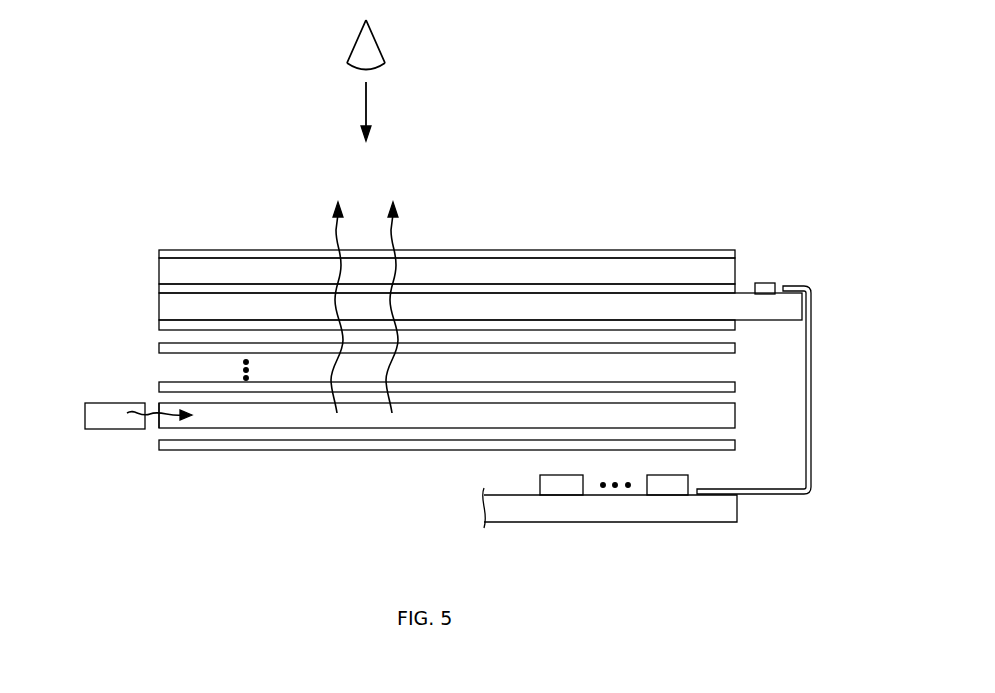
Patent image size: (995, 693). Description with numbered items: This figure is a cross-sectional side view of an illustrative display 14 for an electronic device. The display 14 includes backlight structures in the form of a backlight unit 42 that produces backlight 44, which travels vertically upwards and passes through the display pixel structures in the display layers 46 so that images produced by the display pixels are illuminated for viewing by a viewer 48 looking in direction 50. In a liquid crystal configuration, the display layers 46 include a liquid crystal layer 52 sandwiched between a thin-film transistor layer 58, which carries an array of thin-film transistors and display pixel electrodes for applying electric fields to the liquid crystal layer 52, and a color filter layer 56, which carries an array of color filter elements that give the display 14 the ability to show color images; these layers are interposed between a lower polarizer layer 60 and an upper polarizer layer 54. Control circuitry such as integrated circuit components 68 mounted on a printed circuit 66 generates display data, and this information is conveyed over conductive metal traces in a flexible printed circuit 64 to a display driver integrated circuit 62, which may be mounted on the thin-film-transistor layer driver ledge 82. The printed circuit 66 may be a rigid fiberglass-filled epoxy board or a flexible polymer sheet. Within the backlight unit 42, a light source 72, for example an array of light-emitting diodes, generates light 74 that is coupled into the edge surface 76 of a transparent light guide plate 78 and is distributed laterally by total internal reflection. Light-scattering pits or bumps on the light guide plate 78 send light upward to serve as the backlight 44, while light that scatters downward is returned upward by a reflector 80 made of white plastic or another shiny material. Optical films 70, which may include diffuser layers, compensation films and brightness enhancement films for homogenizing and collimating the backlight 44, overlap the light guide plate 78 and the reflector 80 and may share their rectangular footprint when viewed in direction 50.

The display 14 is at (754, 92).
The backlight unit 42 is at (445, 421).
The backlight 44 is at (338, 237).
The display layers 46 is at (452, 280).
The viewer 48 is at (377, 42).
The direction 50 is at (366, 110).
The liquid crystal layer 52 is at (270, 290).
The upper polarizer layer 54 is at (253, 250).
The color filter layer 56 is at (180, 267).
The thin-film transistor layer 58 is at (212, 302).
The lower polarizer layer 60 is at (420, 336).
The display driver integrated circuit 62 is at (768, 288).
The flexible printed circuit 64 is at (811, 332).
The printed circuit 66 is at (615, 517).
The components 68 is at (657, 475).
The optical films 70 is at (172, 382).
The light source 72 is at (102, 432).
The light 74 is at (155, 417).
The edge surface 76 is at (158, 413).
The light guide plate 78 is at (247, 417).
The reflector 80 is at (317, 452).
The thin-film-transistor layer driver ledge 82 is at (747, 273).